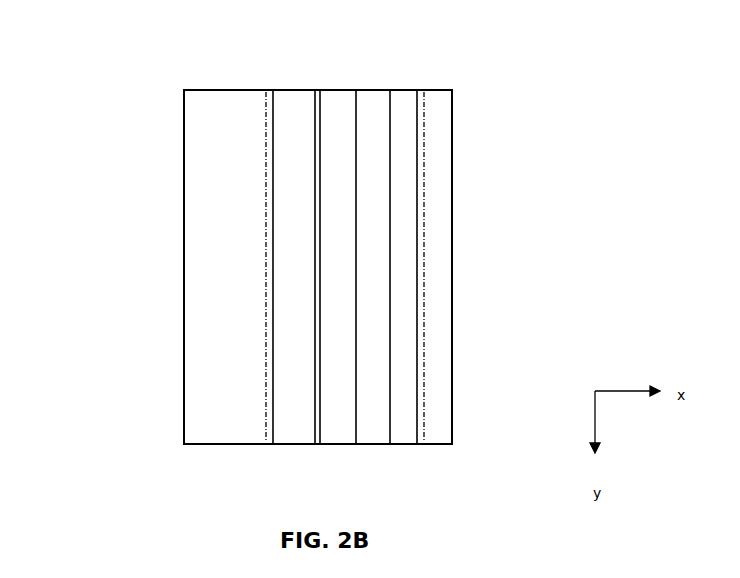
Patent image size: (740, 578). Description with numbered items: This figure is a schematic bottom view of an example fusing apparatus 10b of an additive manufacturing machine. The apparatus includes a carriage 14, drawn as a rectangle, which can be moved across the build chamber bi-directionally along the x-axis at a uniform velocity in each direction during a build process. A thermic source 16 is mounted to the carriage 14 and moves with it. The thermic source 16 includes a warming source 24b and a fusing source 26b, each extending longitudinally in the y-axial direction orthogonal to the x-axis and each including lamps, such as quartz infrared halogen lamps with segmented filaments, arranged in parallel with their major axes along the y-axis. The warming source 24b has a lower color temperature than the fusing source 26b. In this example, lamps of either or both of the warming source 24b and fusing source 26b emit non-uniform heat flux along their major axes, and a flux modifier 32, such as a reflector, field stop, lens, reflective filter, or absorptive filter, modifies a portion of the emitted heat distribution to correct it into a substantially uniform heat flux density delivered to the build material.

The fusing apparatus 10b is at (115, 183).
The carriage 14 is at (183, 300).
The thermic source 16 is at (376, 459).
The warming source 24b is at (303, 103).
The fusing source 26b is at (337, 102).
The flux modifier 32 is at (266, 108).